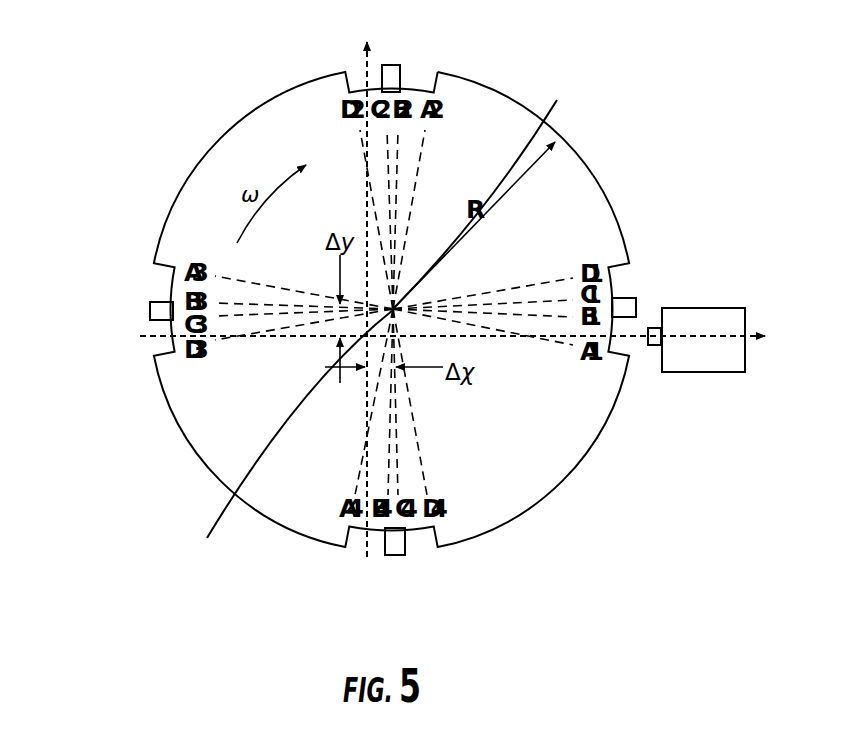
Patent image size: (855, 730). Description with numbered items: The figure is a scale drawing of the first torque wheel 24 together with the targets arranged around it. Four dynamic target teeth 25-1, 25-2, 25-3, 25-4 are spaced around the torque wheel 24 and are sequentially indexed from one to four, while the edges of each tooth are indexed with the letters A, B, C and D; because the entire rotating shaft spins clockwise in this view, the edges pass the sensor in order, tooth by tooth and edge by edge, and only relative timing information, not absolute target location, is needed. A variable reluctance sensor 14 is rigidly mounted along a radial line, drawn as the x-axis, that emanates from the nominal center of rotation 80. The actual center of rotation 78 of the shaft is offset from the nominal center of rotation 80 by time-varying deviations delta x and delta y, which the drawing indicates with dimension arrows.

The first torque wheel 24 is at (655, 167).
The dynamic target tooth 25-1 is at (630, 298).
The dynamic target tooth 25-2 is at (391, 68).
The dynamic target tooth 25-3 is at (160, 302).
The dynamic target tooth 25-4 is at (397, 553).
The variable reluctance (VR) sensor 14 is at (683, 372).
The center of rotation 78 is at (490, 198).
The nominal center of rotation 80 is at (287, 430).